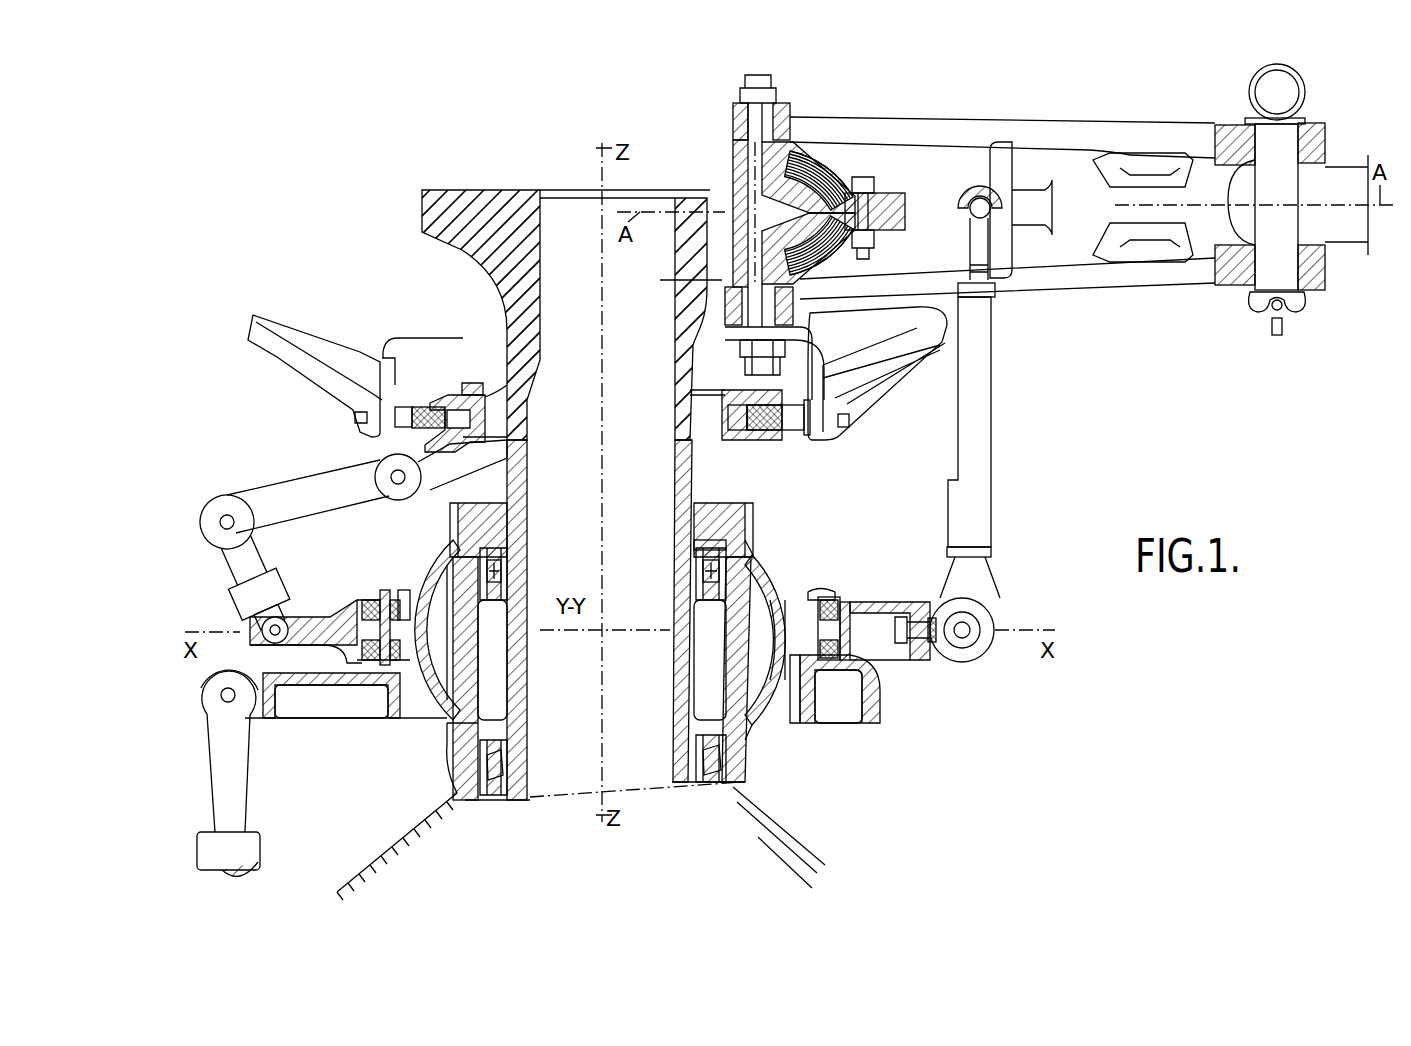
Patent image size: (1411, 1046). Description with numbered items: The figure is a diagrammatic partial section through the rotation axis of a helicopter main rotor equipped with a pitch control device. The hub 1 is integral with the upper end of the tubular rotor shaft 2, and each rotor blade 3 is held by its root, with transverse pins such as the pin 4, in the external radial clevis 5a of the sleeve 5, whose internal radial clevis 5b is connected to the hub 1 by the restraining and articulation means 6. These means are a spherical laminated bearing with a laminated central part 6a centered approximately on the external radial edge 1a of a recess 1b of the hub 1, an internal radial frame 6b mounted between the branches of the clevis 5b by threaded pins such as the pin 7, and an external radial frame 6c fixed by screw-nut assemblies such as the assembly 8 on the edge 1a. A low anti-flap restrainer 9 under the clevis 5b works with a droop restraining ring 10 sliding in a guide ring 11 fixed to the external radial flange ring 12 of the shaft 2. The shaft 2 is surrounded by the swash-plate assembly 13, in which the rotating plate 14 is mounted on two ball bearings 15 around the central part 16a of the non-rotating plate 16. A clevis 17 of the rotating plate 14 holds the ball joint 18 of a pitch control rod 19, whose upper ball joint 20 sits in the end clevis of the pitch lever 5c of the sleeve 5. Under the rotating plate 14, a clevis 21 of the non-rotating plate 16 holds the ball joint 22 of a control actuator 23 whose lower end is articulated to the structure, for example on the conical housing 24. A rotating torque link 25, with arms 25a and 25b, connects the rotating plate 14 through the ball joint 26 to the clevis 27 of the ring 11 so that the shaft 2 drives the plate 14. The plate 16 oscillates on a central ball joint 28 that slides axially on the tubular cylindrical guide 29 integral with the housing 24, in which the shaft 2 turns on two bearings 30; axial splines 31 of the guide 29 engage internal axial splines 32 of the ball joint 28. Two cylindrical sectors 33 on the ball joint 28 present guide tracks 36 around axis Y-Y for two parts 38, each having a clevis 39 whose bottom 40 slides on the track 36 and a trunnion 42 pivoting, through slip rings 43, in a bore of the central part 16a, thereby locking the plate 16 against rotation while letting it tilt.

The hub 1 is at (487, 190).
The external radial edge 1a is at (896, 205).
The recess 1b is at (712, 265).
The rotor shaft 2 is at (516, 462).
The rotor blade 3 is at (1240, 190).
The transverse pin 4 is at (1268, 245).
The sleeve 5 is at (1079, 204).
The external radial clevis 5a is at (1320, 145).
The internal radial clevis 5b is at (866, 122).
The pitch lever 5c is at (1025, 212).
The restraining and articulation means 6 is at (853, 176).
The laminated central part 6a is at (820, 160).
The internal radial frame 6b is at (782, 145).
The external radial frame 6c is at (852, 190).
The threaded pin 7 is at (746, 185).
The screw-nut assembly 8 is at (868, 235).
The low anti-flap restrainer 9 is at (868, 406).
The droop restraining ring 10 is at (762, 435).
The guide ring 11 is at (730, 440).
The external radial flange ring 12 is at (470, 385).
The swash-plate assembly 13 is at (356, 582).
The rotating plate 14 is at (890, 600).
The ball bearing 15 is at (840, 600).
The non-rotating plate 16 is at (861, 716).
The central part 16a is at (818, 708).
The external radial clevis 17 is at (926, 618).
The ball joint 18 is at (966, 628).
The pitch control rod 19 is at (975, 415).
The ball joint 20 is at (986, 225).
The external radial clevis 21 is at (266, 712).
The ball joint 22 is at (220, 700).
The control actuator 23 is at (247, 840).
The conical housing 24 is at (400, 852).
The rotating torque link 25 is at (283, 475).
The arm 25a is at (246, 578).
The arm 25b is at (268, 505).
The ball joint 26 is at (282, 624).
The clevis 27 is at (428, 462).
The central ball joint 28 is at (728, 598).
The tubular cylindrical guide 29 is at (462, 742).
The bearing 30 is at (694, 565).
The axial spline 31 is at (450, 522).
The internal axial spline 32 is at (445, 540).
The cylindrical sector 33 is at (768, 700).
The guide track 36 is at (786, 580).
The part 38 is at (386, 685).
The clevis 39 is at (810, 560).
The bottom 40 is at (770, 640).
The trunnion 42 is at (822, 690).
The slip ring 43 is at (818, 597).